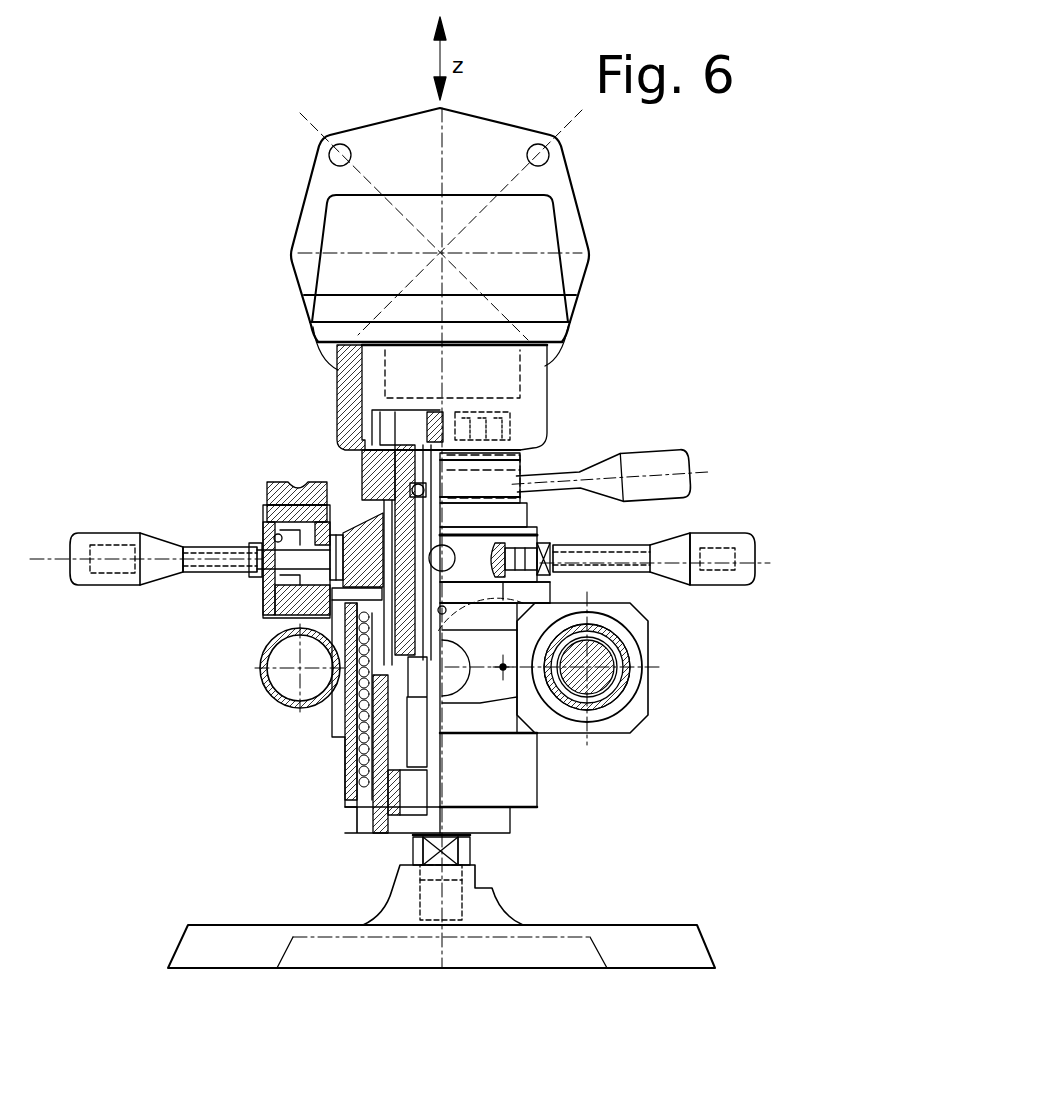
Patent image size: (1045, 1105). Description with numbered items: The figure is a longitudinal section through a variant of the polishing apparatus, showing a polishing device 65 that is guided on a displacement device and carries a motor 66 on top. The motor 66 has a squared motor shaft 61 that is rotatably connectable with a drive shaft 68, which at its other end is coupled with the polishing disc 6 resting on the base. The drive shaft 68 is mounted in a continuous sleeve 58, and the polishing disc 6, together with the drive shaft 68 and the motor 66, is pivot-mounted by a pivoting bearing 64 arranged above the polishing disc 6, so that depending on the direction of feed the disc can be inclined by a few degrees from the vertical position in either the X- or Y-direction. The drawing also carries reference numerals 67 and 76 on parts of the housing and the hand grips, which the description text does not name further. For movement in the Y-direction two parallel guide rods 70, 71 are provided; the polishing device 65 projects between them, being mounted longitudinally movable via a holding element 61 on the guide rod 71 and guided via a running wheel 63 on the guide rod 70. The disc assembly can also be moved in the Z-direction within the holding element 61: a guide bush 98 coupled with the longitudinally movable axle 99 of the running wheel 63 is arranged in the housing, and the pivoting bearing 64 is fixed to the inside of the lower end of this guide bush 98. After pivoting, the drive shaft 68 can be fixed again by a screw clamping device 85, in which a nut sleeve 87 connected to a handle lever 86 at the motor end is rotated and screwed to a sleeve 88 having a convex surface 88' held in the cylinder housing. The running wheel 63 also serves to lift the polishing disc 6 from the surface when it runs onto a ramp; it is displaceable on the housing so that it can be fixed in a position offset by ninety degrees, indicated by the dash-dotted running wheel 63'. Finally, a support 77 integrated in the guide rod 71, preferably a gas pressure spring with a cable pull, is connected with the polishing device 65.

The polishing disc 6 is at (222, 950).
The continuous sleeve 58 is at (340, 722).
The holding element 61 is at (656, 630).
The running wheel 63 is at (260, 521).
The running wheel in offset position 63' is at (534, 589).
The pivoting bearing 64 is at (370, 812).
The polishing device 65 is at (290, 243).
The motor 66 is at (527, 224).
The housing cavity 67 is at (458, 410).
The drive shaft 68 is at (360, 453).
The guide rod 70 is at (266, 686).
The guide rod 71 is at (620, 693).
The handle 76 is at (78, 552).
The support 77 is at (613, 658).
The screw clamping device 85 is at (360, 477).
The handle lever 86 is at (668, 458).
The nut sleeve 87 is at (500, 447).
The sleeve 88 is at (508, 546).
The convex surface 88' is at (511, 490).
The guide bush 98 is at (345, 770).
The axle 99 is at (262, 592).